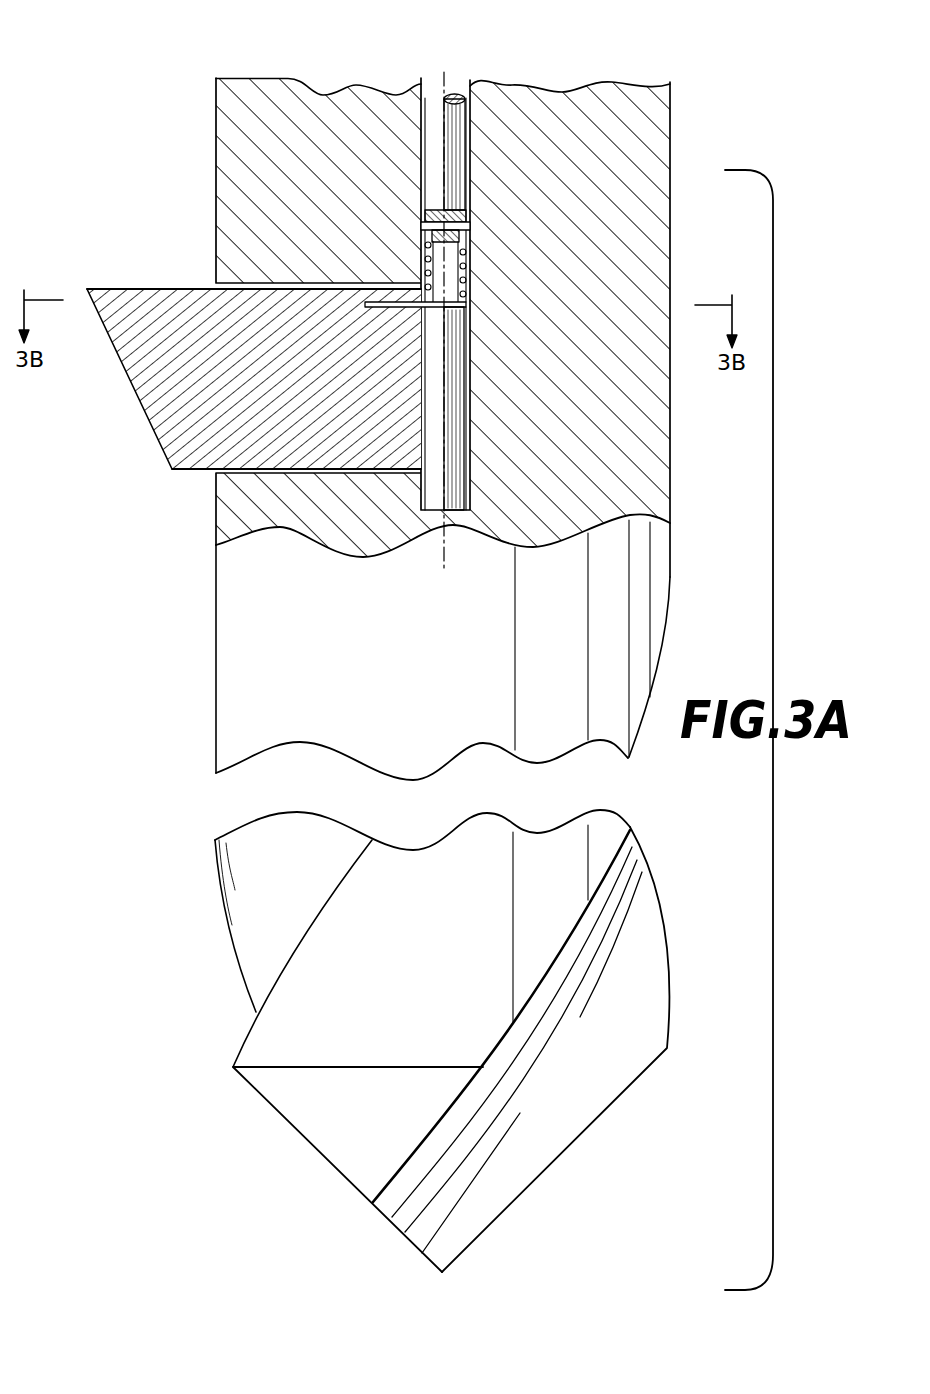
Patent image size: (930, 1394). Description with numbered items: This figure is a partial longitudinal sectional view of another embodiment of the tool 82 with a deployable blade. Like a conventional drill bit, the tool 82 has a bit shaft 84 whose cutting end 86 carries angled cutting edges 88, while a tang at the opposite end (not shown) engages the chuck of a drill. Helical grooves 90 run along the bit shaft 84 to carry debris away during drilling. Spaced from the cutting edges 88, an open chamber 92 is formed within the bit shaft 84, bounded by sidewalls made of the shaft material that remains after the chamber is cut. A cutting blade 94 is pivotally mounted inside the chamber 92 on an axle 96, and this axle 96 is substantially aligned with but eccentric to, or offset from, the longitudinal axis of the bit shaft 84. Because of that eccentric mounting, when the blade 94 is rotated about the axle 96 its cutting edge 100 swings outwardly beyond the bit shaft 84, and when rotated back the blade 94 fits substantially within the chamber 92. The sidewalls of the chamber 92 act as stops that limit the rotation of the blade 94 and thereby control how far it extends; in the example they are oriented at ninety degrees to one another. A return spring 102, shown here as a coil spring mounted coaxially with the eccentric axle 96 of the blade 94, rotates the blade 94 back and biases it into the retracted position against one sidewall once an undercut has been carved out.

The tool 82 is at (122, 681).
The bit shaft 84 is at (662, 209).
The cutting end 86 is at (380, 1223).
The angled cutting edges 88 is at (530, 1190).
The helical grooves 90 is at (600, 1068).
The open chamber 92 is at (215, 470).
The cutting blade 94 is at (153, 288).
The axle 96 is at (444, 563).
The cutting edge 100 is at (133, 387).
The return spring 102 is at (462, 253).